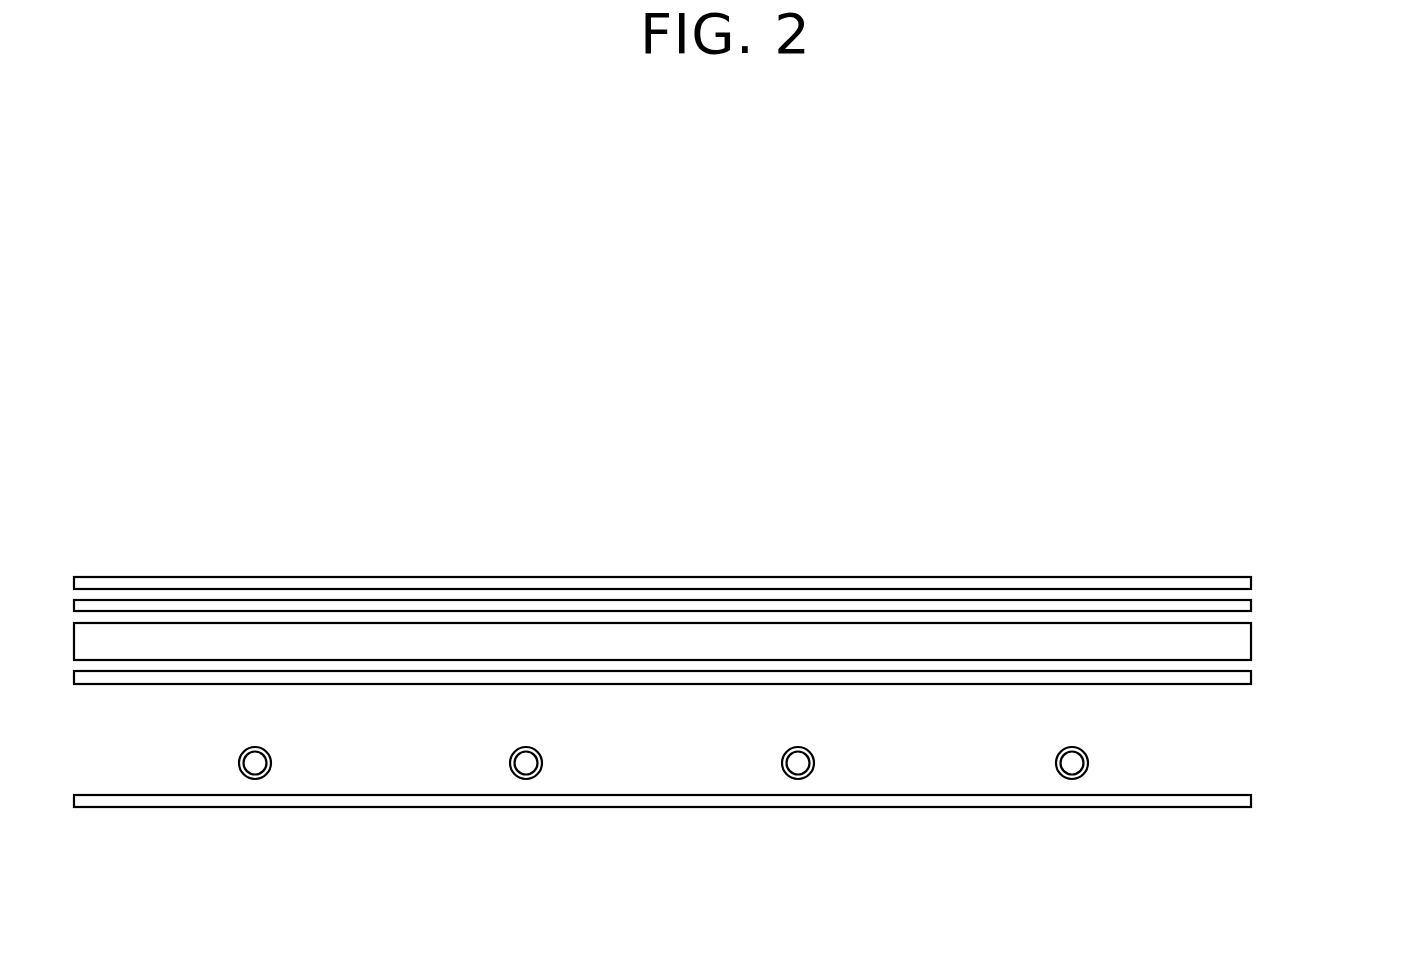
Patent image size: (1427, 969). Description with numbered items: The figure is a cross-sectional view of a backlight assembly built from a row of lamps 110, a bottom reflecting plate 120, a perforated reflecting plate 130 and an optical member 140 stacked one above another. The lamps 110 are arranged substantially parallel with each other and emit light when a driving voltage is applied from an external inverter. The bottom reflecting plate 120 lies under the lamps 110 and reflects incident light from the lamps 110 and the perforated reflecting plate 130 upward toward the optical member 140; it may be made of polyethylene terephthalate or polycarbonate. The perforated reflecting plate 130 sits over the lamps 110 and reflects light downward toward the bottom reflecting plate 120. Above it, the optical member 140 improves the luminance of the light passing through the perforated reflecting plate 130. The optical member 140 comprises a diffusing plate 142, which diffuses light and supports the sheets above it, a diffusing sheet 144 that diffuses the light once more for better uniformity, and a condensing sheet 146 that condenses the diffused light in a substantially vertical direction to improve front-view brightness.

The lamps 110 is at (1089, 760).
The bottom reflecting plate 120 is at (1251, 800).
The perforated reflecting plate 130 is at (1251, 678).
The optical member 140 is at (750, 606).
The diffusing plate 142 is at (1251, 641).
The diffusing sheet 144 is at (1251, 604).
The condensing sheet 146 is at (1251, 583).